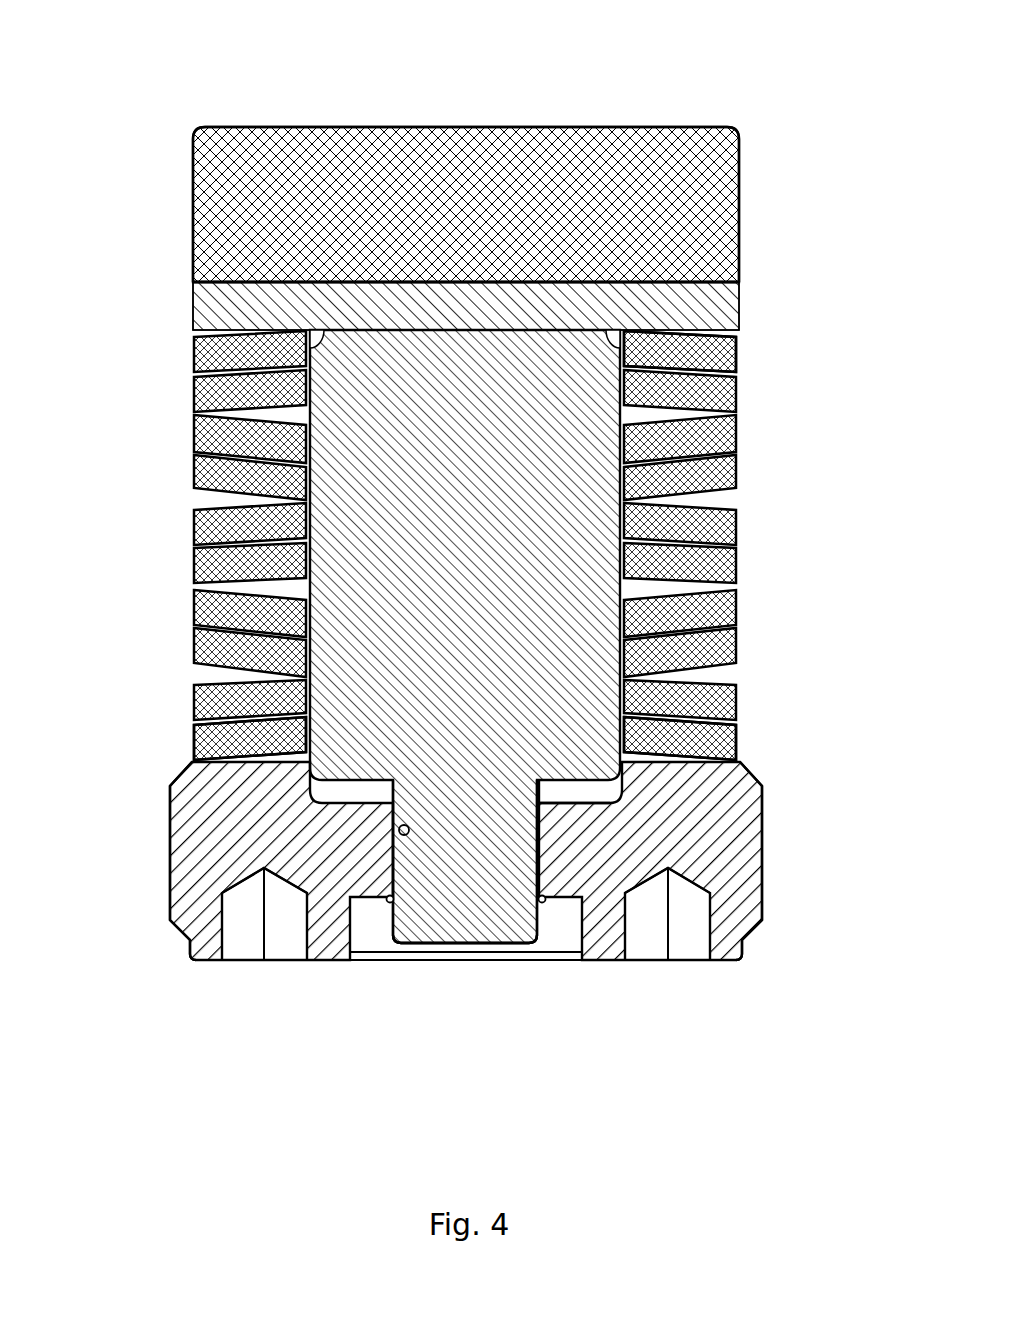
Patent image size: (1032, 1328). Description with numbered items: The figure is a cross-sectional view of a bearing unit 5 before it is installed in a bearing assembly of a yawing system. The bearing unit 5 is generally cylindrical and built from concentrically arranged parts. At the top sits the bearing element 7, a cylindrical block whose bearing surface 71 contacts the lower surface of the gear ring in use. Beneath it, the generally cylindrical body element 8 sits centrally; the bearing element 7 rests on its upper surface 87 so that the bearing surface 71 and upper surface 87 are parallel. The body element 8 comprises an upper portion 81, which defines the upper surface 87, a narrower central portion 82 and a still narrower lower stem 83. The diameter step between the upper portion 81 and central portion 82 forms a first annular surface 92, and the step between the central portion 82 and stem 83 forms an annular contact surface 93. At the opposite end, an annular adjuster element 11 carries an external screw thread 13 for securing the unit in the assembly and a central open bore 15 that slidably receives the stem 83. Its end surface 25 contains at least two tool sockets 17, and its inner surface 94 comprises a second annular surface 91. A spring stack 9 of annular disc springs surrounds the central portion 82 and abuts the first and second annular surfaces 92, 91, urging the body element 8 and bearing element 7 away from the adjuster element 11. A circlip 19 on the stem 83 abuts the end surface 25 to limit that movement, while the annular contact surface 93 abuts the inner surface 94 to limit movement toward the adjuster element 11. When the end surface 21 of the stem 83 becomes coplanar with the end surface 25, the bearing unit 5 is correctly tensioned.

The bearing unit 5 is at (778, 1046).
The bearing element 7 is at (178, 216).
The body element 8 is at (178, 306).
The spring stack 9 is at (178, 548).
The adjuster element 11 is at (783, 822).
The external screw thread 13 is at (170, 873).
The open bore 15 is at (408, 830).
The tool sockets 17 is at (243, 938).
The circlip 19 is at (545, 901).
The end surface of the stem 21 is at (438, 943).
The end surface of the adjuster element 25 is at (336, 962).
The bearing surface 71 is at (280, 127).
The upper portion 81 is at (712, 310).
The central portion 82 is at (545, 468).
The stem 83 is at (492, 827).
The upper surface 87 is at (617, 281).
The second annular surface 91 is at (667, 762).
The first annular surface 92 is at (702, 326).
The annular contact surface 93 is at (600, 780).
The inner surface 94 is at (308, 755).